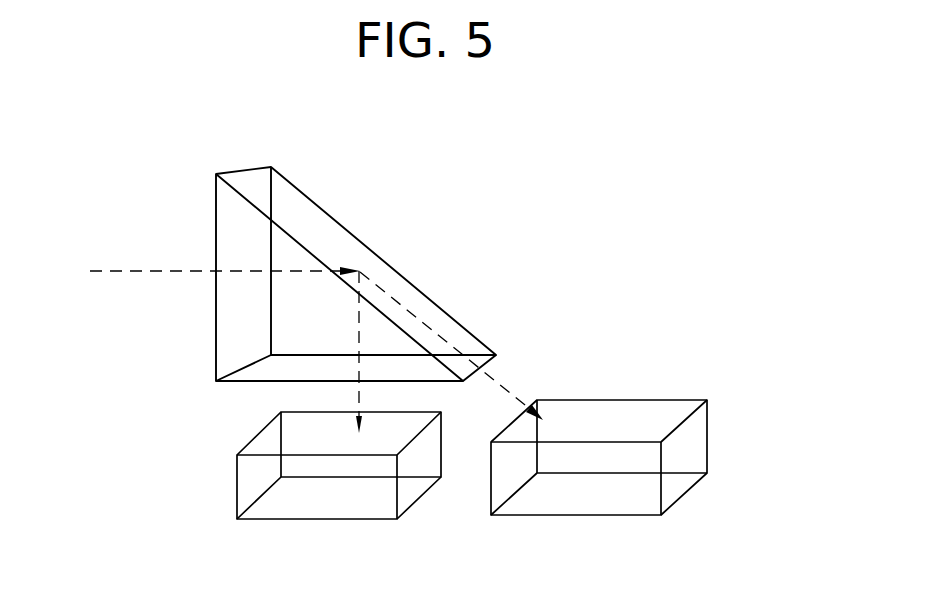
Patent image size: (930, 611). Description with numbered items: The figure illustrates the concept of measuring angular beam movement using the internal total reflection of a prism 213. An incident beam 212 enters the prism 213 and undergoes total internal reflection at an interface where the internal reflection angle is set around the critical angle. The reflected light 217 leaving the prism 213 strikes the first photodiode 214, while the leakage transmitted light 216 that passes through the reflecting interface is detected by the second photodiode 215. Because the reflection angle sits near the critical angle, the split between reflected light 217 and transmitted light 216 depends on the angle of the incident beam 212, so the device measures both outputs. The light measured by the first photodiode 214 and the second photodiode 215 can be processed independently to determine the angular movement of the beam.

The incident beam 212 is at (202, 236).
The prism 213 is at (292, 197).
The photodiode 1 214 is at (328, 519).
The photodiode 2 215 is at (577, 515).
The transmitted light 216 is at (513, 391).
The reflected light 217 is at (359, 395).